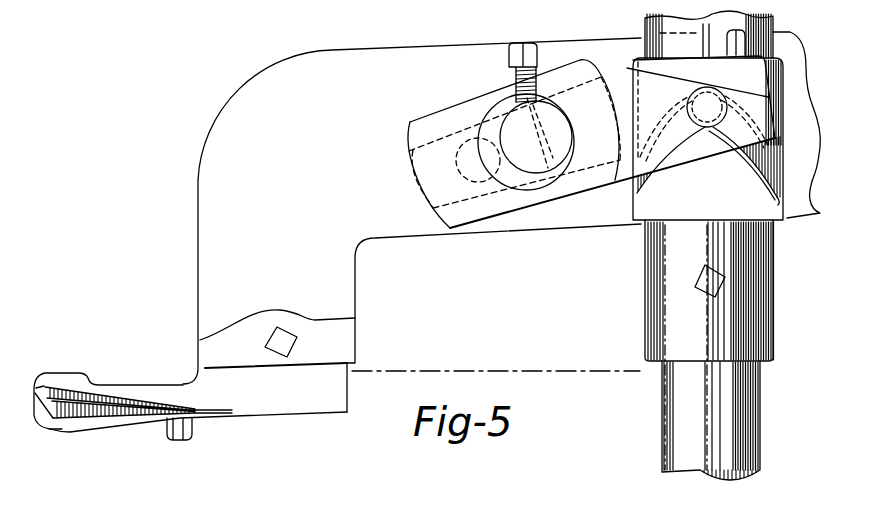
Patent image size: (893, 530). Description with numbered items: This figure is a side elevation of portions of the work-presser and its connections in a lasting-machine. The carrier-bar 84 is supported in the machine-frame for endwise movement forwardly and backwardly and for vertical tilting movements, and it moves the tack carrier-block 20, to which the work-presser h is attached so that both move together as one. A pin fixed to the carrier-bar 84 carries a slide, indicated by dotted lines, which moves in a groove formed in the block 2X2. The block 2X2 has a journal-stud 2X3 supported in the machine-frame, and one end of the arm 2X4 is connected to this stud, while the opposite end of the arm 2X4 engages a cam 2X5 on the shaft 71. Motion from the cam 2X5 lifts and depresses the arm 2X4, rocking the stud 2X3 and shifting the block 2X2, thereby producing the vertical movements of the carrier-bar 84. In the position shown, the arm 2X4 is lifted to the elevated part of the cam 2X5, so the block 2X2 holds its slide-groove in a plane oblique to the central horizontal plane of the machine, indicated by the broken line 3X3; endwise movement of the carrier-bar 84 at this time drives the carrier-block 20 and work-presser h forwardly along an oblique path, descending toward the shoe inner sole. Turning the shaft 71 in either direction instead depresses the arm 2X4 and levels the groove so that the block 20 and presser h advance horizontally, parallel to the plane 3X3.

The carrier-bar 84 is at (412, 225).
The carrier-block 20 is at (92, 378).
The bar tip i is at (42, 423).
The work-presser h is at (78, 430).
The block 2X2 is at (408, 128).
The journal-stud 2X3 is at (536, 108).
The arm 2X4 is at (604, 178).
The cam 2X5 is at (792, 216).
The shaft 71 is at (656, 441).
The horizontal plane of the machine 3X3 is at (558, 378).